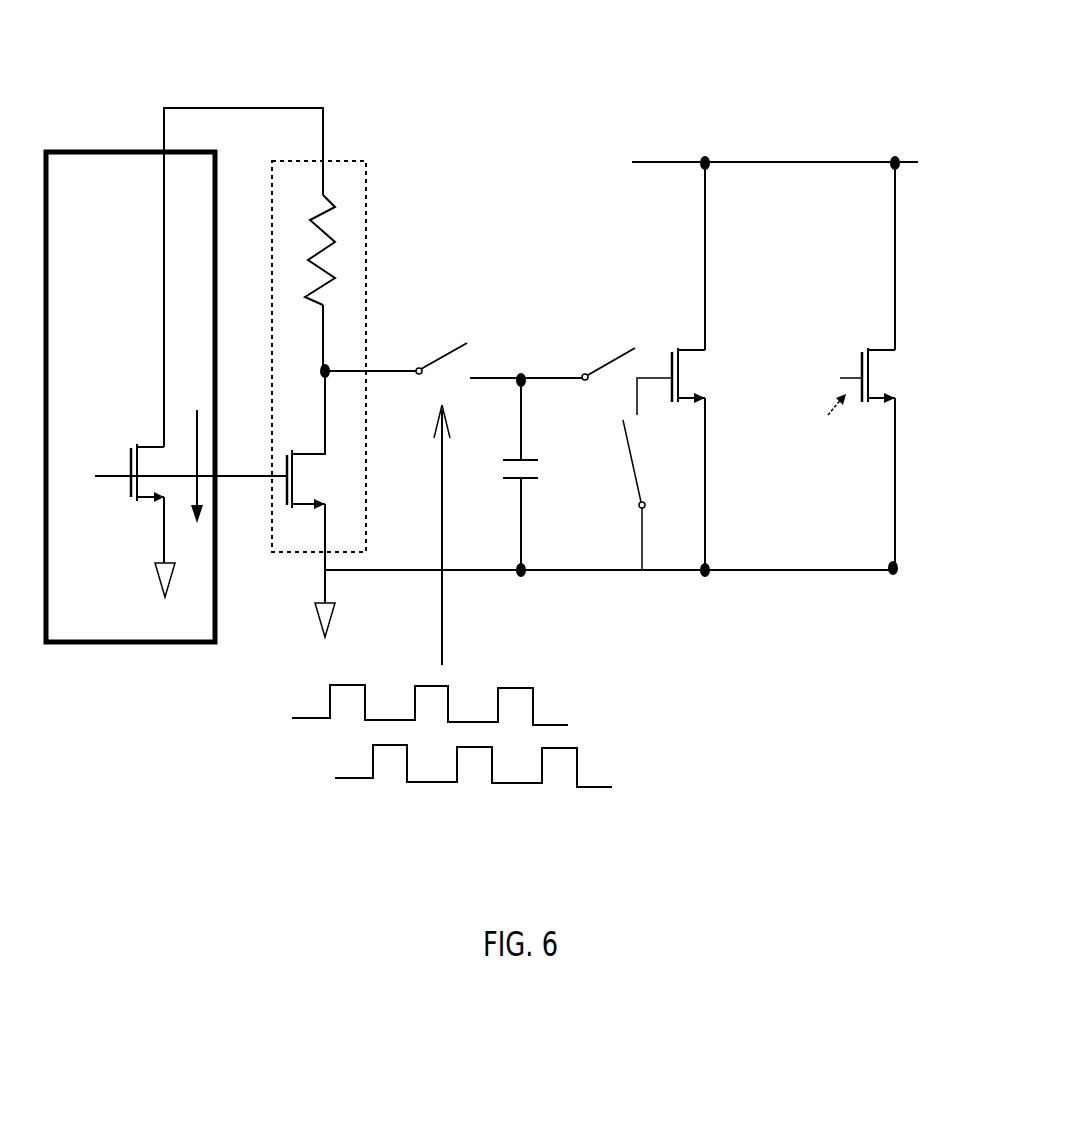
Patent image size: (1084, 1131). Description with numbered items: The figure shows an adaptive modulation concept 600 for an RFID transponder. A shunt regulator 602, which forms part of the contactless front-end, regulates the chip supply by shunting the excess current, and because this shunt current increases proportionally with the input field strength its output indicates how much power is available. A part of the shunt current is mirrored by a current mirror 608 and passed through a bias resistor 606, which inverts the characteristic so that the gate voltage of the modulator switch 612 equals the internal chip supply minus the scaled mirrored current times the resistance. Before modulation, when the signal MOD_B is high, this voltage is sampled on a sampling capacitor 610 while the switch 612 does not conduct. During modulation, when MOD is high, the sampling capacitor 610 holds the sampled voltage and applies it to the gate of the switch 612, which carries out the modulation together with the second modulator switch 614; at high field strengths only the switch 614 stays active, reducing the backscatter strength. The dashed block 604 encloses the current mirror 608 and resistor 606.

The adaptive modulation concept 600 is at (604, 86).
The shunt regulator 602 is at (90, 148).
The current mirror / sensing branch 604 is at (367, 225).
The resistor 606 is at (305, 250).
The current mirror 608 is at (310, 440).
The sampling capacitor 610 is at (523, 362).
The modulator switch 612 is at (712, 378).
The modulator switch 614 is at (902, 378).